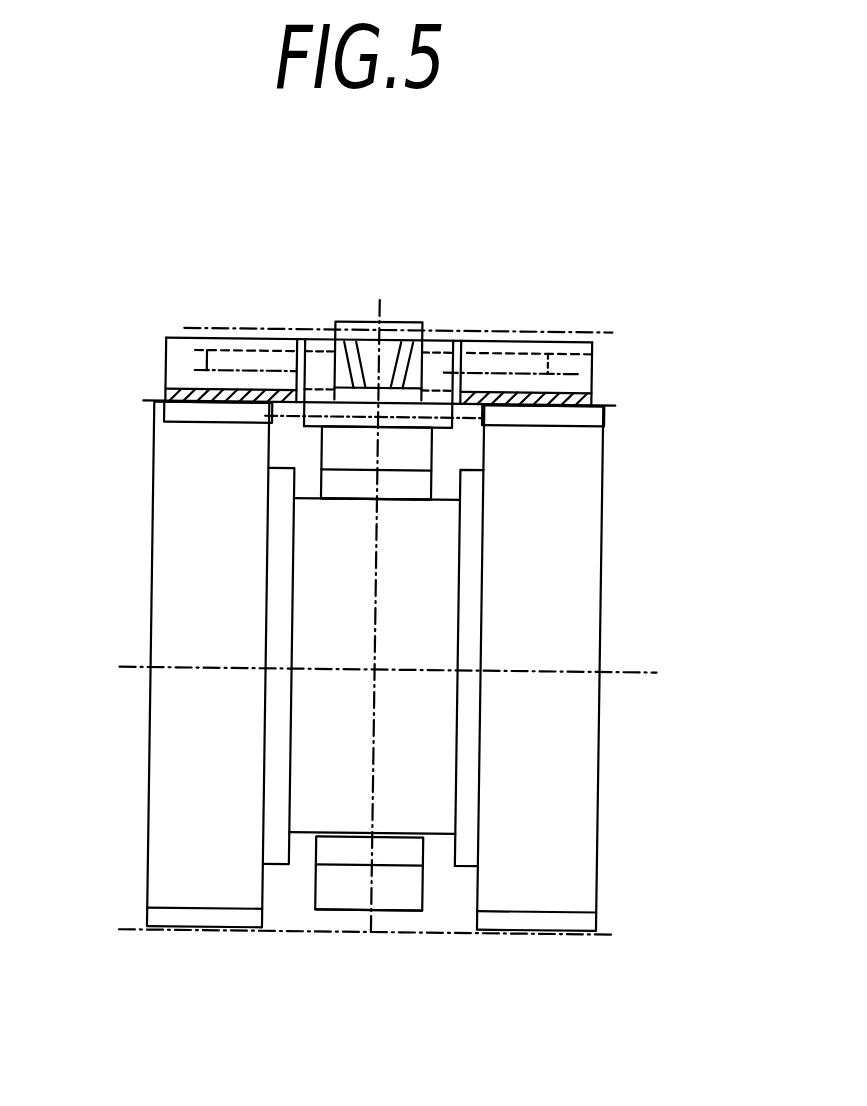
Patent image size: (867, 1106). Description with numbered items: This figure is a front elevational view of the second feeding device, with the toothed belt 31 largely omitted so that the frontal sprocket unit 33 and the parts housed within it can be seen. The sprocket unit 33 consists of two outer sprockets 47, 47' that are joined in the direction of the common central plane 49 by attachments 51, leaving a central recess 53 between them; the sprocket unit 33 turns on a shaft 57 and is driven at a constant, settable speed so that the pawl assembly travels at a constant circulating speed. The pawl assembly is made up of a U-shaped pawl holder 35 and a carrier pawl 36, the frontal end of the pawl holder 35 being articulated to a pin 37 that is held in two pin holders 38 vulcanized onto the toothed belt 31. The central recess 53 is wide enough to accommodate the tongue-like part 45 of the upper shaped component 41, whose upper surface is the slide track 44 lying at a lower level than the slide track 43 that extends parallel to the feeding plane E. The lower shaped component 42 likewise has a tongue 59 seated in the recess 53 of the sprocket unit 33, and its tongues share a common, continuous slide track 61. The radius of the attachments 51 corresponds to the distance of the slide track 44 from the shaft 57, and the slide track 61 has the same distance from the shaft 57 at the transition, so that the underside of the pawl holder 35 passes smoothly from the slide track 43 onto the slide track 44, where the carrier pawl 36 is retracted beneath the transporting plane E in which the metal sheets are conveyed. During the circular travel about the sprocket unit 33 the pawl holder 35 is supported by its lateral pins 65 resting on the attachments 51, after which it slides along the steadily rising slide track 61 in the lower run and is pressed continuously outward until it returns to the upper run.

The toothed belt 31 is at (577, 390).
The frontal sprocket unit 33 is at (135, 815).
The pawl holder 35 is at (430, 356).
The carrier pawl 36 is at (355, 327).
The pin 37 is at (533, 353).
The pin holder 38 is at (230, 342).
The upper shaped component 41 is at (343, 510).
The lower shaped component 42 is at (442, 887).
The slide track 43 is at (362, 428).
The slide track 44 is at (412, 467).
The tongue-like part 45 is at (414, 481).
The outer sprocket 47 is at (165, 664).
The outer sprocket 47' is at (590, 668).
The common central plane 49 is at (467, 618).
The attachment 51 is at (277, 867).
The central recess 53 is at (350, 835).
The shaft 57 is at (632, 667).
The tongue 59 is at (415, 855).
The slide track 61 is at (396, 895).
The lateral pin 65 is at (295, 408).
The feeding plane E is at (592, 330).